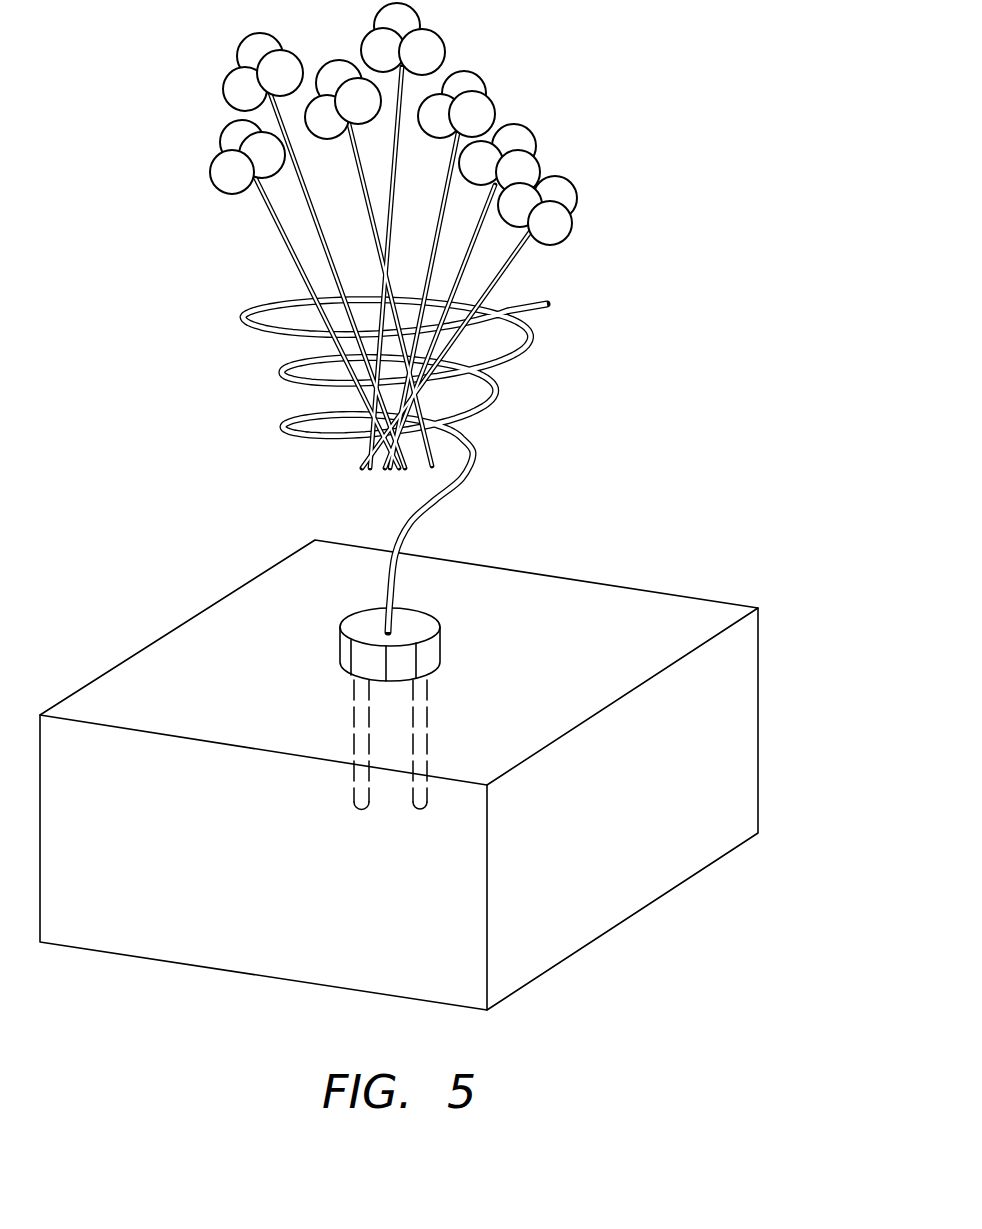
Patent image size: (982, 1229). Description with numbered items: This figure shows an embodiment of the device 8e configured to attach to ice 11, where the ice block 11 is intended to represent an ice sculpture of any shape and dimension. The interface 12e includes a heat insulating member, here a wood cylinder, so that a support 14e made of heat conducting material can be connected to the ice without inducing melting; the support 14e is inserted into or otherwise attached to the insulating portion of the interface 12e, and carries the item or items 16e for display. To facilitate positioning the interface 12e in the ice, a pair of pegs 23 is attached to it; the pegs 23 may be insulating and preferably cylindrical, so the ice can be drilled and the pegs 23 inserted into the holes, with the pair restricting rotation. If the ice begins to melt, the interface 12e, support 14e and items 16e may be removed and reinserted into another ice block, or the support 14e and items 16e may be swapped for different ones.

The device 8e is at (317, 317).
The ice 11 is at (236, 588).
The interface 12e is at (441, 640).
The support 14e is at (481, 436).
The items 16e is at (198, 372).
The pegs 23 is at (415, 812).